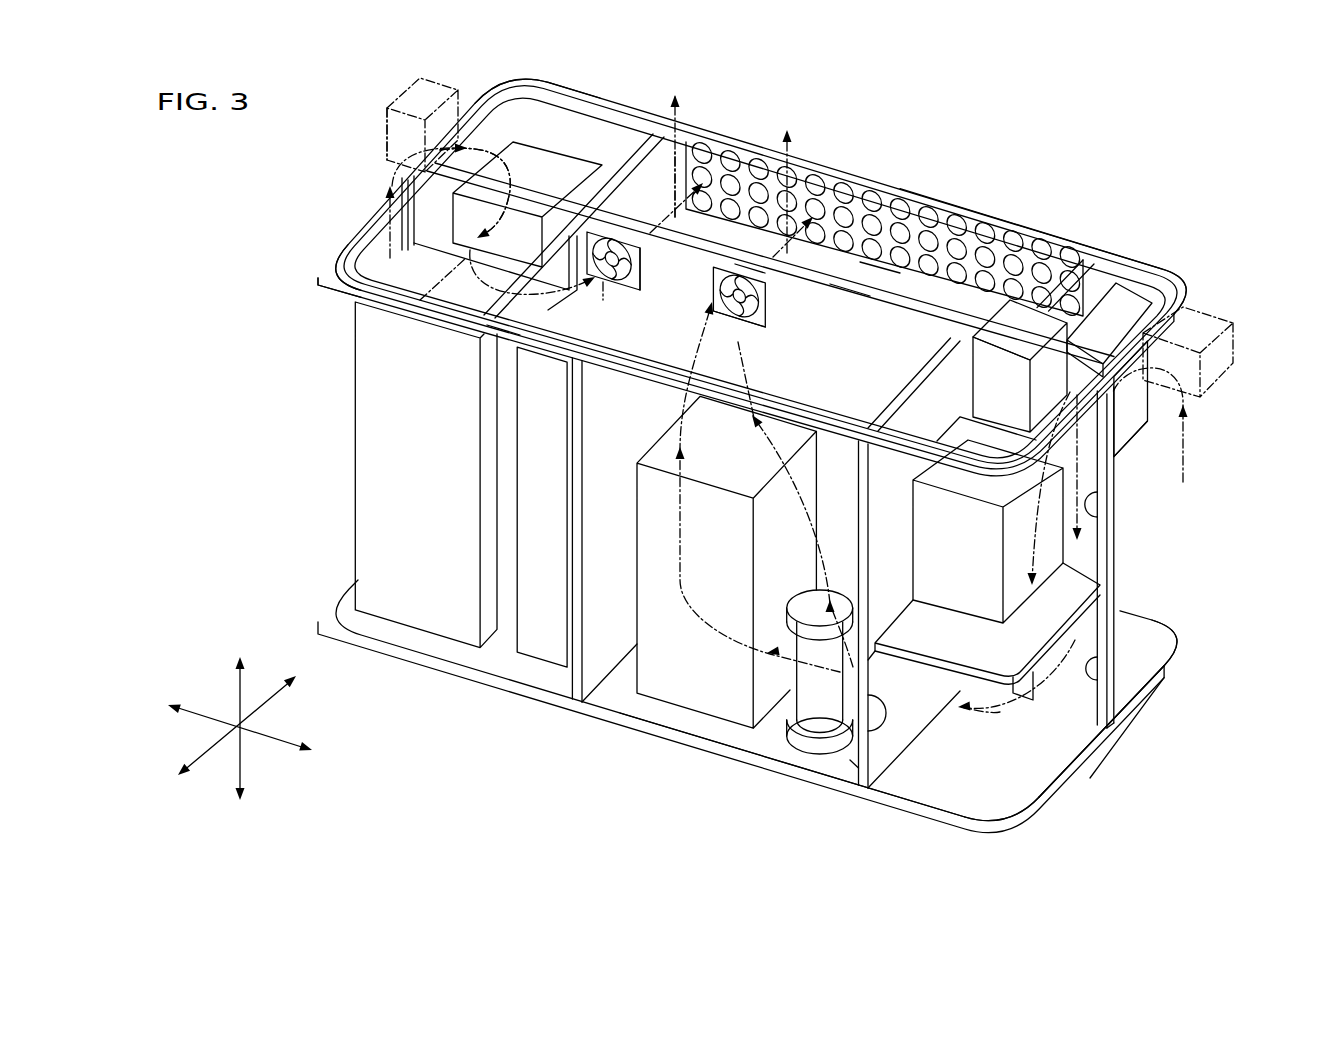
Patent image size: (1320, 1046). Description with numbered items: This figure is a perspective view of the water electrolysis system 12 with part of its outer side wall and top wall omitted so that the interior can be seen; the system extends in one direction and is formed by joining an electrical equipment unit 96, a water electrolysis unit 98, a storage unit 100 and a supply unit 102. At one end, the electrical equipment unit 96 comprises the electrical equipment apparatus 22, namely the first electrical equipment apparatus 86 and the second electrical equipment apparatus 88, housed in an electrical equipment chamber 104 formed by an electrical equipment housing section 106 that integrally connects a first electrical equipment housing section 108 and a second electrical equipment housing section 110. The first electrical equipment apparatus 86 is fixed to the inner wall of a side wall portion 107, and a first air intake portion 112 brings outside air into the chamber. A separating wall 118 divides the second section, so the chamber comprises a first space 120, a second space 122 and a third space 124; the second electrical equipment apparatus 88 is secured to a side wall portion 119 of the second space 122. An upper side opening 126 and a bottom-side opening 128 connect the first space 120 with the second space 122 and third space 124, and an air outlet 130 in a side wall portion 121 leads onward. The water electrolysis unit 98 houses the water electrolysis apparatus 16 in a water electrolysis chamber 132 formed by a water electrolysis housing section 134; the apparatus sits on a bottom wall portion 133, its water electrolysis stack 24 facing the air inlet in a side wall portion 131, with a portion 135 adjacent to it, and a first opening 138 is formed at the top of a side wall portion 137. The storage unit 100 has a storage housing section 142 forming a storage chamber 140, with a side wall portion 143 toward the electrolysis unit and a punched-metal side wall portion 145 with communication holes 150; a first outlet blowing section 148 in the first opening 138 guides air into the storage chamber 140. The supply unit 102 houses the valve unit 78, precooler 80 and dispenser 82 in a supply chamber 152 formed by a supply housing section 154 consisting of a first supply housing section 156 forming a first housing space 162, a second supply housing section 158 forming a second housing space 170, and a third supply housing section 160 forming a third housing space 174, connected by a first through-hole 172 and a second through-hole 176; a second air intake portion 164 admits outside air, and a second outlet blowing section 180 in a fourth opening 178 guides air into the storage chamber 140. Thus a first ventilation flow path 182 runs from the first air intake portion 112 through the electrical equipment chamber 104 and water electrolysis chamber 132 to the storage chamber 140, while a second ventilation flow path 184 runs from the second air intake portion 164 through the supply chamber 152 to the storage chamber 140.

The water electrolysis system 12 is at (187, 168).
The water electrolysis apparatus 16 is at (736, 737).
The electrical equipment apparatus 22 is at (1232, 513).
The water electrolysis stack 24 is at (816, 746).
The valve unit 78 is at (540, 656).
The precooler 80 is at (522, 152).
The dispenser 82 is at (370, 437).
The first electrical equipment apparatus 86 is at (1128, 424).
The second electrical equipment apparatus 88 is at (1043, 551).
The electrical equipment unit 96 is at (1151, 257).
The water electrolysis unit 98 is at (851, 282).
The storage unit 100 is at (1049, 218).
The supply unit 102 is at (653, 106).
The electrical equipment chamber 104 is at (1148, 625).
The electrical equipment housing section 106 is at (1210, 710).
The side wall portion 107 is at (1098, 292).
The first electrical equipment housing section 108 is at (1140, 700).
The second electrical equipment housing section 110 is at (1094, 752).
The first air intake portion 112 is at (1237, 325).
The separating wall 118 is at (1020, 696).
The side wall portion 119 is at (899, 594).
The first space 120 is at (1163, 647).
The side wall portion 121 is at (897, 667).
The second space 122 is at (1008, 362).
The third space 124 is at (1027, 781).
The upper side opening 126 is at (1088, 497).
The bottom-side opening 128 is at (1100, 676).
The air outlet 130 is at (884, 760).
The side wall portion 131 is at (857, 762).
The water electrolysis chamber 132 is at (884, 330).
The bottom wall portion 133 is at (762, 766).
The water electrolysis housing section 134 is at (611, 722).
The portion of the water electrolysis apparatus 135 is at (690, 692).
The side wall portion 137 is at (921, 345).
The first opening 138 is at (766, 323).
The storage chamber 140 is at (667, 173).
The storage housing section 142 is at (743, 128).
The side wall portion 143 is at (749, 250).
The side wall portion 145 is at (1001, 350).
The first outlet blowing section 148 is at (766, 298).
The communication holes 150 is at (923, 247).
The supply chamber 152 is at (539, 117).
The supply housing section 154 is at (321, 238).
The first supply housing section 156 is at (440, 78).
The second supply housing section 158 is at (316, 262).
The third supply housing section 160 is at (507, 340).
The first housing space 162 is at (604, 132).
The second air intake portion 164 is at (386, 128).
The second housing space 170 is at (361, 245).
The first through-hole 172 is at (433, 248).
The third housing space 174 is at (652, 257).
The second through-hole 176 is at (551, 262).
The fourth opening 178 is at (626, 246).
The second outlet blowing section 180 is at (603, 282).
The first ventilation flow path 182 is at (983, 708).
The second ventilation flow path 184 is at (425, 320).